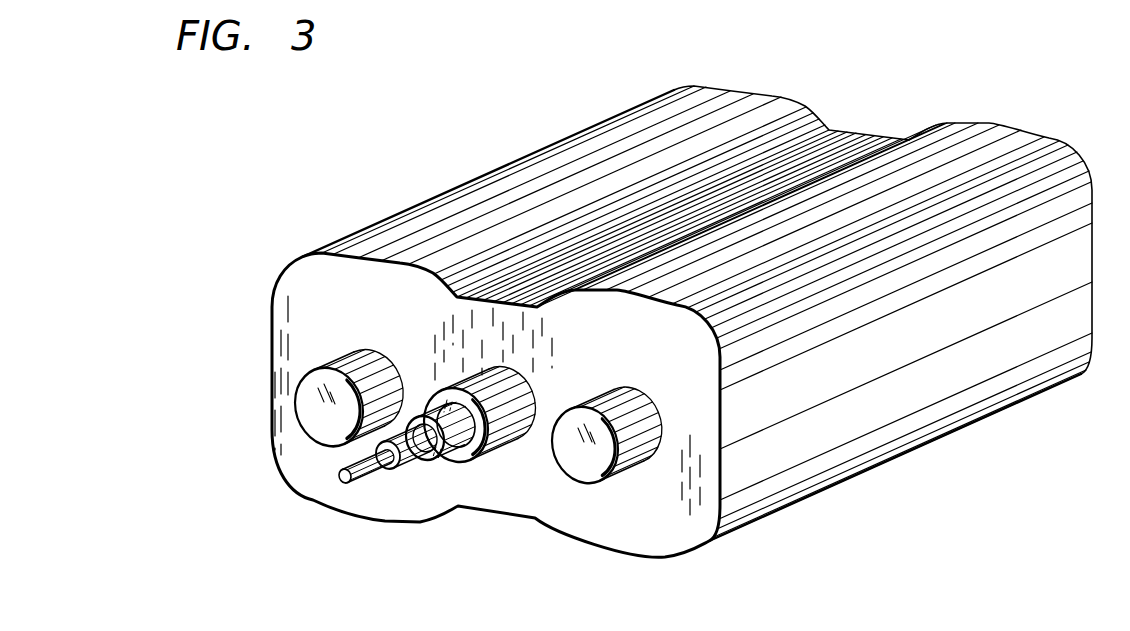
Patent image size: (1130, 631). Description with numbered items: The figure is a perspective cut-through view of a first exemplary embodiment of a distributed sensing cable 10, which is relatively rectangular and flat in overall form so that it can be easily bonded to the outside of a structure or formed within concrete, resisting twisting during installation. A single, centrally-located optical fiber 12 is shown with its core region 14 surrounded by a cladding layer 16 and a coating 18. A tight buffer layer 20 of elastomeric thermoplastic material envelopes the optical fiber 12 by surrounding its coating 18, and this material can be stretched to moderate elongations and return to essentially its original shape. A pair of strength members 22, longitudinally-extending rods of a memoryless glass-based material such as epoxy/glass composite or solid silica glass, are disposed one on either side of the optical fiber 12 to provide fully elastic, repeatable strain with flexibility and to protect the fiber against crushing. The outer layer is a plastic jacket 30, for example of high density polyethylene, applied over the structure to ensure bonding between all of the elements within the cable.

The distributed sensing cable 10 is at (234, 99).
The optical fiber 12 is at (435, 583).
The core region 14 is at (357, 484).
The cladding layer 16 is at (413, 458).
The coating 18 is at (457, 432).
The tight buffer layer 20 is at (505, 420).
The strength members 22 is at (712, 585).
The plastic jacket 30 is at (313, 283).